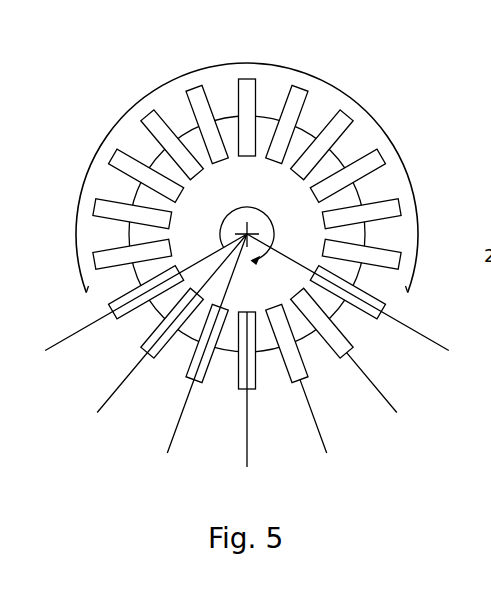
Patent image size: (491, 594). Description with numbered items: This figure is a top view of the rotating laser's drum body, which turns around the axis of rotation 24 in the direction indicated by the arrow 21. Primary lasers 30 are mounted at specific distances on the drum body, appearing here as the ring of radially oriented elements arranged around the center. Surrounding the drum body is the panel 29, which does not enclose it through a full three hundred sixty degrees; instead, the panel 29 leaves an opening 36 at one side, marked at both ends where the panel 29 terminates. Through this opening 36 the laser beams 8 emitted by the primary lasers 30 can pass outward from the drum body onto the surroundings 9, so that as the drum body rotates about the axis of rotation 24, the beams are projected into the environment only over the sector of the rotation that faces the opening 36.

The panel 29 is at (364, 104).
The primary lasers 30 is at (283, 97).
The laser beams 8 is at (378, 383).
The opening 36 is at (92, 296).
The arrow 21 is at (223, 223).
The axis of rotation 24 is at (247, 236).
The surroundings 9 is at (91, 461).